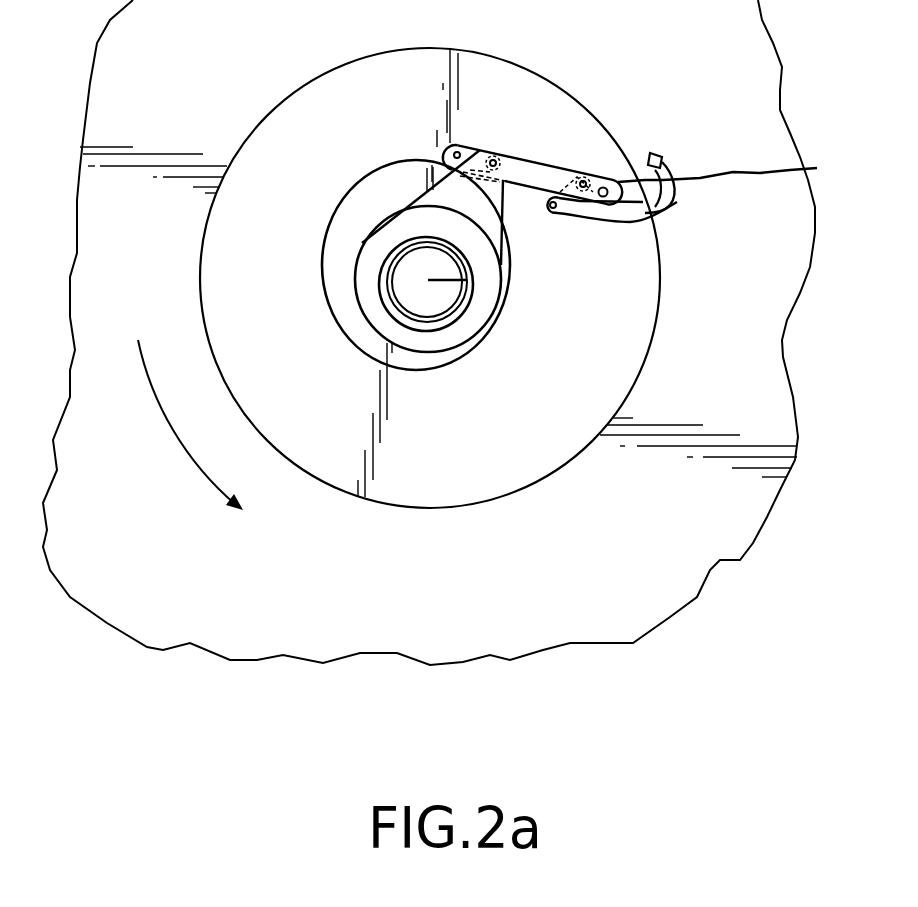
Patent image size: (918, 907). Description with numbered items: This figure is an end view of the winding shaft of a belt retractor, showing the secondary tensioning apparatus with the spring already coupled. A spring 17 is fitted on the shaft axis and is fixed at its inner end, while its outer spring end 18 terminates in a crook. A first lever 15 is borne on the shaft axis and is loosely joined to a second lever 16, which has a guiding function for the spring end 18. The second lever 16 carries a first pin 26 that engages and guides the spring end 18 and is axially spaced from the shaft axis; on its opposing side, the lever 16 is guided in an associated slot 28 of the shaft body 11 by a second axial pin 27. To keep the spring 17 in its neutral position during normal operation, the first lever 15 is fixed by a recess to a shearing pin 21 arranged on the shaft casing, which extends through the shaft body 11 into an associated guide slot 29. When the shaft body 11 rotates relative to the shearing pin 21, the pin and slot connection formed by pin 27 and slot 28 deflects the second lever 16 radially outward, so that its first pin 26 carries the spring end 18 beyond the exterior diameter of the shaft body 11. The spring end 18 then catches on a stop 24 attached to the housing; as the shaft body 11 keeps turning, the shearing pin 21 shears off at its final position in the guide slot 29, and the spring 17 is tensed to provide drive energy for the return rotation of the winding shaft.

The shaft body 11 is at (456, 278).
The first lever 15 is at (465, 251).
The second lever 16 is at (532, 114).
The spring 17 is at (467, 340).
The spring end 18 is at (734, 166).
The shearing pin 21 is at (522, 89).
The stop 24 is at (699, 123).
The first pin 26 is at (701, 172).
The second axial pin 27 is at (632, 118).
The slot 28 is at (646, 201).
The guide slot 29 is at (486, 79).